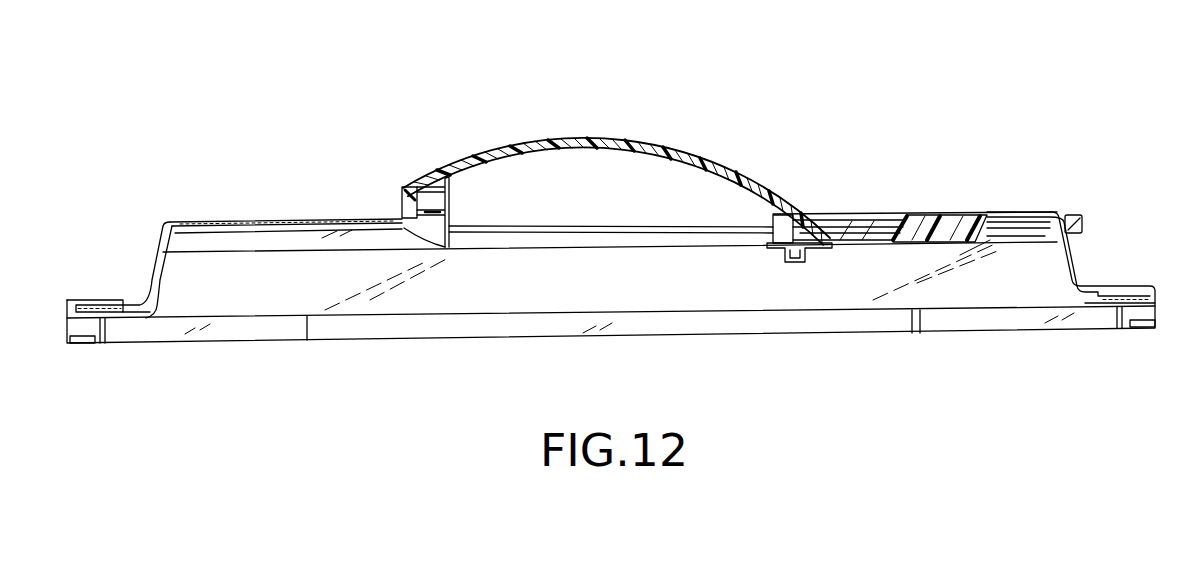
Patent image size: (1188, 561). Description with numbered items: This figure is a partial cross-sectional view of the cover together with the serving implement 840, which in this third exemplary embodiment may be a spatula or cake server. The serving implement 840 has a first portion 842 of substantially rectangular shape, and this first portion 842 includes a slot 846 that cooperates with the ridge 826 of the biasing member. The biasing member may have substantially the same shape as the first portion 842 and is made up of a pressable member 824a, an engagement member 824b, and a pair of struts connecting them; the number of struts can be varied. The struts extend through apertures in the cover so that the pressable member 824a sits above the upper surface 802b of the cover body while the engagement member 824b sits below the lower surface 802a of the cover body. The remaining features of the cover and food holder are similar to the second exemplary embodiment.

The serving implement 840 is at (662, 130).
The lower surface 802a is at (630, 248).
The upper surface 802b is at (540, 237).
The first portion 842 is at (848, 232).
The slot 846 is at (887, 237).
The ridge 826 is at (970, 215).
The pressable member 824a is at (1078, 213).
The engagement member 824b is at (1013, 232).